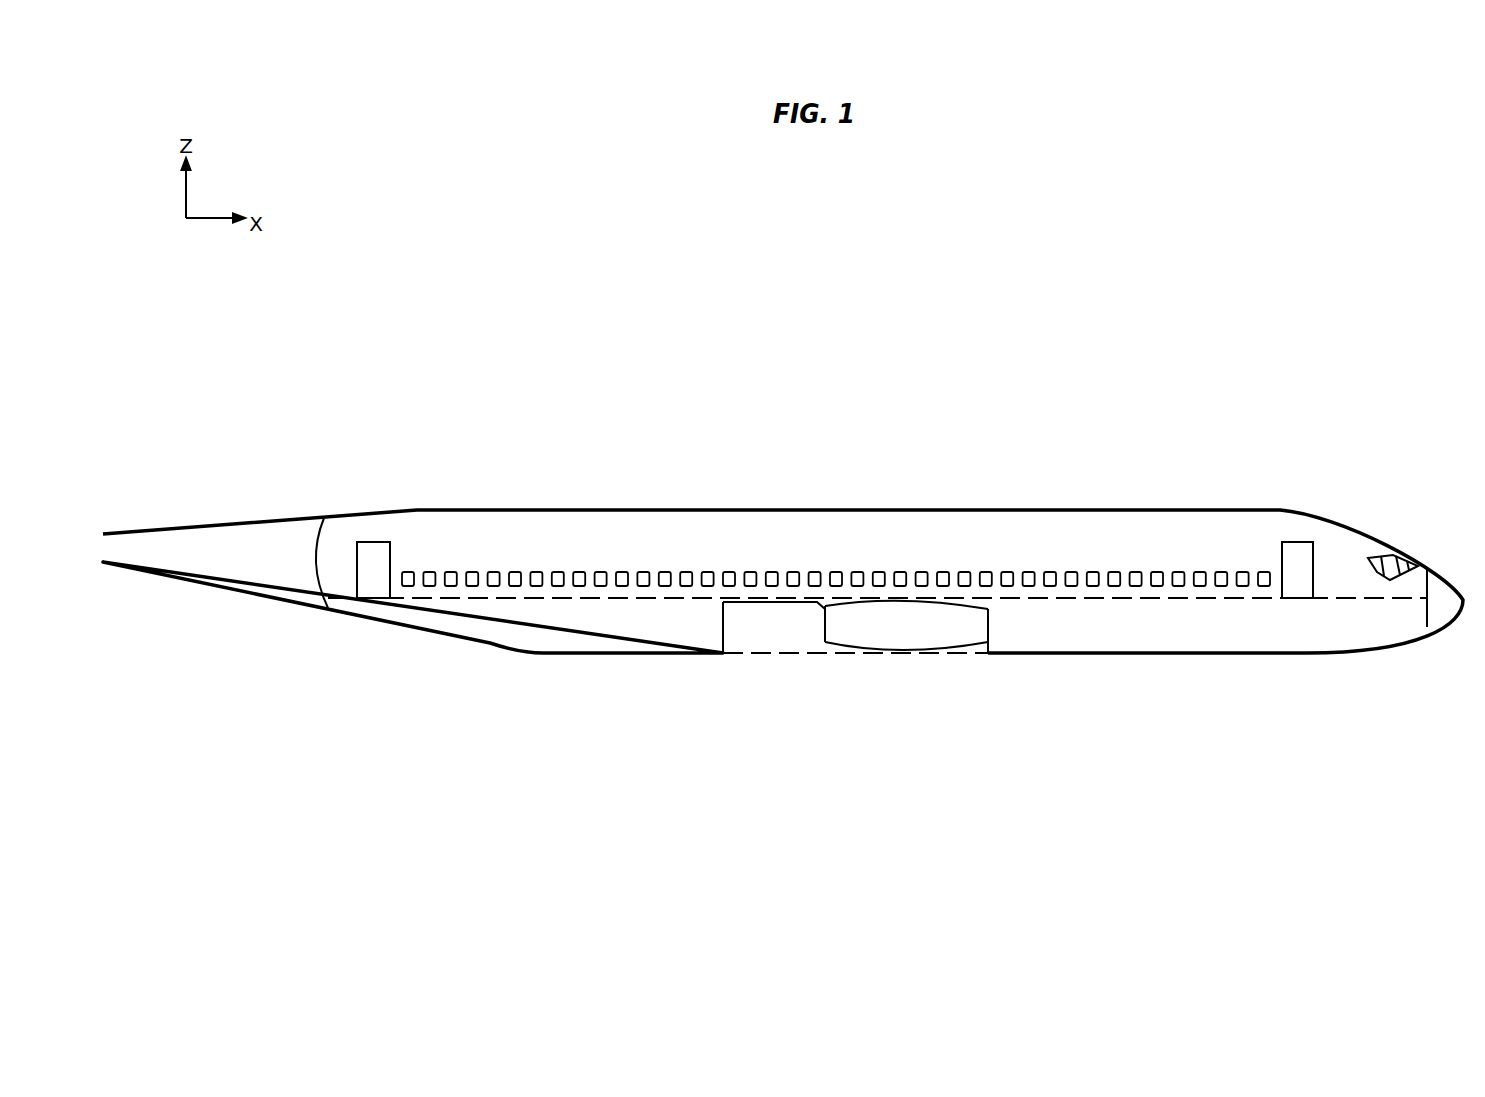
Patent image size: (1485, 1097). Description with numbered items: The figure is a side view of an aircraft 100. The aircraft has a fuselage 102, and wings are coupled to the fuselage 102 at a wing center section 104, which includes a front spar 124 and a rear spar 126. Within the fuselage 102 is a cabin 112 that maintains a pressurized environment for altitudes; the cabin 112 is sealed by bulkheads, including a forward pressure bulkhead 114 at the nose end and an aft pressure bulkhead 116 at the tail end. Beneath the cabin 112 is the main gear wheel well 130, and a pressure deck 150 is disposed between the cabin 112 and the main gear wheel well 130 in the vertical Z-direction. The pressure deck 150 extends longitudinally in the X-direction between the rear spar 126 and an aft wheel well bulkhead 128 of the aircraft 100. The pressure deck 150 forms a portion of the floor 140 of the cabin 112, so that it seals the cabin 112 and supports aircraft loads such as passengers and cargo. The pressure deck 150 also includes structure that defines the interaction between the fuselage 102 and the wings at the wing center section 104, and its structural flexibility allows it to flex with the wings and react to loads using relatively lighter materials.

The aircraft 100 is at (577, 172).
The fuselage 102 is at (1177, 500).
The wing center section 104 is at (912, 586).
The cabin 112 is at (605, 522).
The forward pressure bulkhead 114 is at (1440, 575).
The aft pressure bulkhead 116 is at (302, 547).
The front spar 124 is at (1000, 634).
The rear spar 126 is at (839, 629).
The aft wheel well bulkhead 128 is at (711, 627).
The main gear wheel well 130 is at (781, 644).
The floor 140 is at (435, 612).
The pressure deck 150 is at (782, 588).